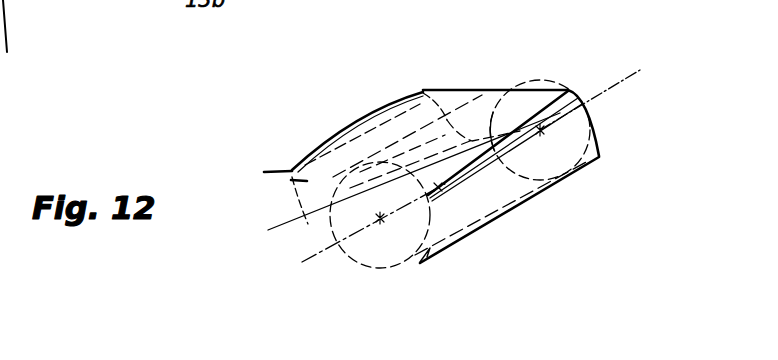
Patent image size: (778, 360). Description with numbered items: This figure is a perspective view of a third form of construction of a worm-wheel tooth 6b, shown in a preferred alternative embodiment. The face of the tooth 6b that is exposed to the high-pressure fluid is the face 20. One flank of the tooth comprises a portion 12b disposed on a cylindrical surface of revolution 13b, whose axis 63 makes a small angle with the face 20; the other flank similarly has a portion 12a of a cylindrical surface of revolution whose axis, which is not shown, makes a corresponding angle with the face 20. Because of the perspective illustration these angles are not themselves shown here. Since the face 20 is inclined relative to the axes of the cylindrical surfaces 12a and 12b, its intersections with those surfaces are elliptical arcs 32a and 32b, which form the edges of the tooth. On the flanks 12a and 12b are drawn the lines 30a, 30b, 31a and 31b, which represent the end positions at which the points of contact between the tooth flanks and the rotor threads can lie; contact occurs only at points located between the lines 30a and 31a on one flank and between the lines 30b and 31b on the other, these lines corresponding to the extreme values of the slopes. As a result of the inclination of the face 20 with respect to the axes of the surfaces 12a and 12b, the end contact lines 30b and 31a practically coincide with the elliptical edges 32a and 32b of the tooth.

The worm-wheel tooth 6b is at (452, 102).
The flank portion 12a is at (290, 177).
The flank portion 12b is at (469, 191).
The cylindrical surface of revolution 13b is at (397, 265).
The tooth face 20 is at (484, 102).
The end contact line 30a is at (402, 106).
The end contact line 30b is at (532, 117).
The end contact line 31a is at (370, 121).
The end contact line 31b is at (599, 148).
The elliptical arc 32a is at (333, 147).
The elliptical arc 32b is at (290, 222).
The axis 63 is at (302, 257).